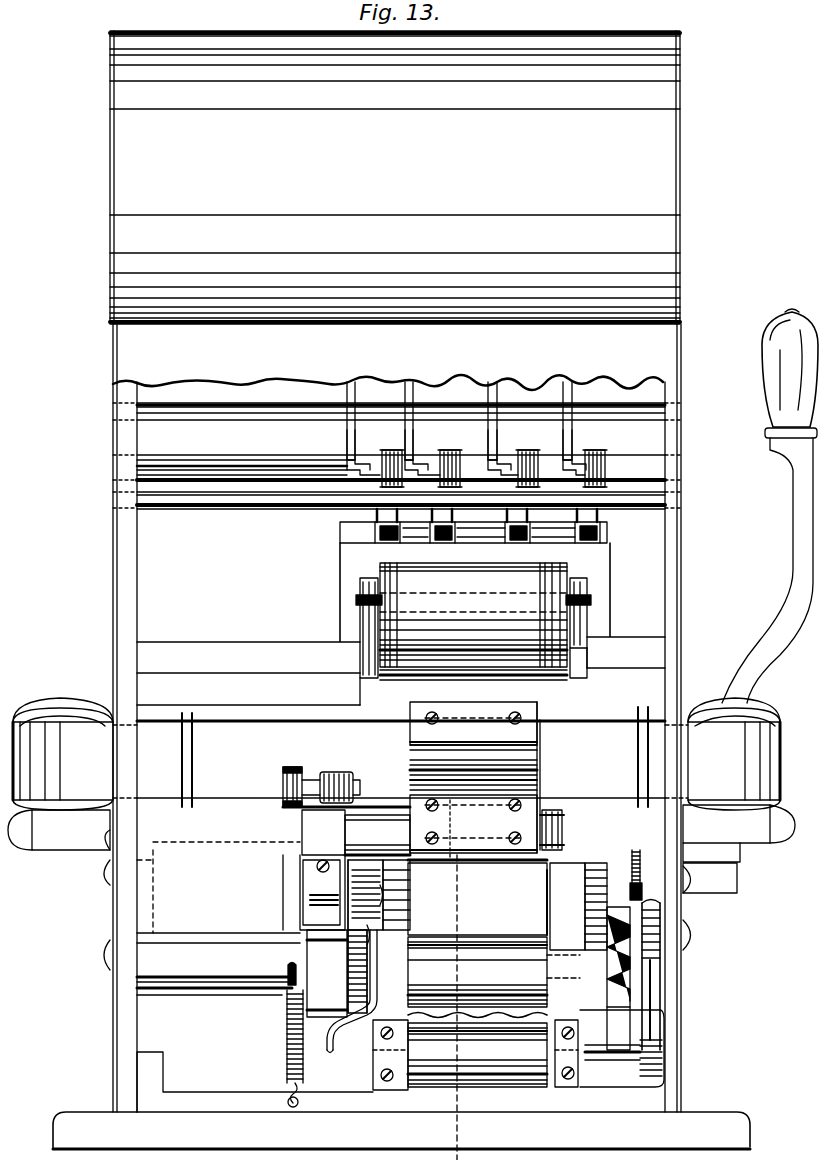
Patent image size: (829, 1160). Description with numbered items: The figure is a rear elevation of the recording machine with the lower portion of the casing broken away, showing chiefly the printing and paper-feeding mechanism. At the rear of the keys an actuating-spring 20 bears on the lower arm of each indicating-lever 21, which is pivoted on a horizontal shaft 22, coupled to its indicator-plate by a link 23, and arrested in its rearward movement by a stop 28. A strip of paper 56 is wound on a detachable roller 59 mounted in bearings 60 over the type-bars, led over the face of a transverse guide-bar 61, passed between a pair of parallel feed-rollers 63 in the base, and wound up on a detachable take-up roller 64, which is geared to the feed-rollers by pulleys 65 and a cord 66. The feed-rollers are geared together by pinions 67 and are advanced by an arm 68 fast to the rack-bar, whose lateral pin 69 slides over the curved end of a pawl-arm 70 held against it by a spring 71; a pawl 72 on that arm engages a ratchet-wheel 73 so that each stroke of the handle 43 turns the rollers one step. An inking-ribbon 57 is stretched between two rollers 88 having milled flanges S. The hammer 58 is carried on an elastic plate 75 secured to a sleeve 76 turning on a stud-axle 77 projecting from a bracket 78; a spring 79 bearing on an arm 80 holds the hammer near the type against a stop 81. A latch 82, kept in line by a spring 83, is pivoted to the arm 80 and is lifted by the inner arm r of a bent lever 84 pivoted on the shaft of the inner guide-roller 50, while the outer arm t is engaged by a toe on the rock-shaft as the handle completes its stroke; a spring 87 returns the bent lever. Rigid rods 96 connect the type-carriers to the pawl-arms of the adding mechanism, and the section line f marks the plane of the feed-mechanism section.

The actuating-spring 20 is at (391, 450).
The indicating-lever 21 is at (406, 393).
The horizontal shaft 22 is at (250, 455).
The link 23 is at (380, 543).
The stop 28 is at (300, 404).
The handle 43 is at (797, 513).
The inner guide-roller 50 is at (248, 977).
The strip of paper 56 is at (473, 788).
The inking-ribbon 57 is at (396, 758).
The hammer 58 is at (540, 728).
The detachable roller 59 is at (473, 615).
The bearings 60 is at (360, 622).
The transverse guide-bar 61 is at (455, 672).
The feed-rollers 63 is at (494, 977).
The take-up roller 64 is at (475, 1055).
The pulleys 65 is at (660, 930).
The cord 66 is at (650, 995).
The pinions 67 is at (352, 991).
The arm 68 is at (558, 902).
The lateral pin 69 is at (570, 866).
The pawl-arm 70 is at (596, 906).
The spring 71 is at (646, 875).
The pawl 72 is at (634, 958).
The ratchet-wheel 73 is at (622, 1048).
The elastic plate 75 is at (492, 741).
The sleeve 76 is at (377, 835).
The stud pin or axle 77 is at (562, 830).
The bracket 78 is at (299, 777).
The spring 79 is at (343, 772).
The arm 80 is at (346, 831).
The stop 81 is at (303, 872).
The latch 82 is at (327, 964).
The spring 83 is at (324, 882).
The bent lever 84 is at (337, 976).
The spring 87 is at (287, 1056).
The rollers 88 is at (72, 718).
The rigid bar or rod 96 is at (401, 894).
The milled flanges S is at (403, 833).
The section line f is at (455, 830).
The inner arm r is at (359, 929).
The outer arm t is at (374, 895).